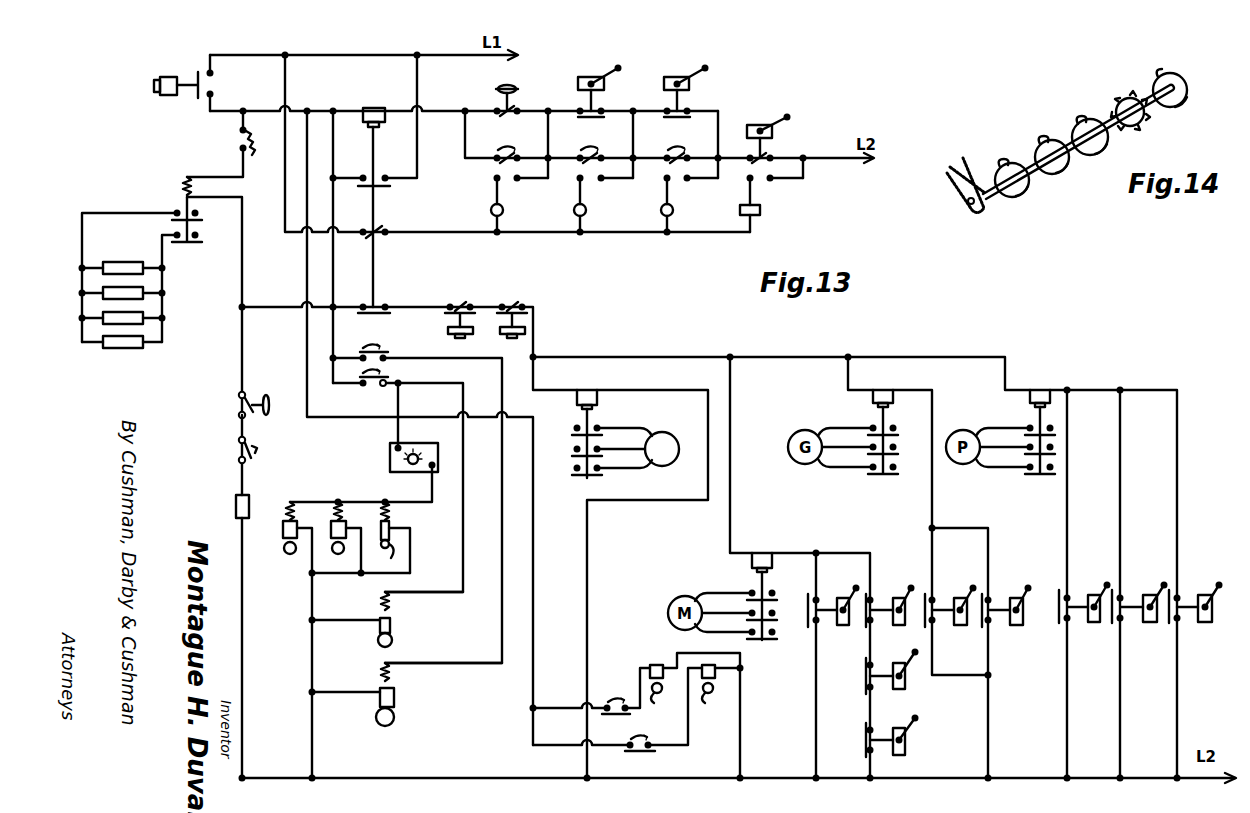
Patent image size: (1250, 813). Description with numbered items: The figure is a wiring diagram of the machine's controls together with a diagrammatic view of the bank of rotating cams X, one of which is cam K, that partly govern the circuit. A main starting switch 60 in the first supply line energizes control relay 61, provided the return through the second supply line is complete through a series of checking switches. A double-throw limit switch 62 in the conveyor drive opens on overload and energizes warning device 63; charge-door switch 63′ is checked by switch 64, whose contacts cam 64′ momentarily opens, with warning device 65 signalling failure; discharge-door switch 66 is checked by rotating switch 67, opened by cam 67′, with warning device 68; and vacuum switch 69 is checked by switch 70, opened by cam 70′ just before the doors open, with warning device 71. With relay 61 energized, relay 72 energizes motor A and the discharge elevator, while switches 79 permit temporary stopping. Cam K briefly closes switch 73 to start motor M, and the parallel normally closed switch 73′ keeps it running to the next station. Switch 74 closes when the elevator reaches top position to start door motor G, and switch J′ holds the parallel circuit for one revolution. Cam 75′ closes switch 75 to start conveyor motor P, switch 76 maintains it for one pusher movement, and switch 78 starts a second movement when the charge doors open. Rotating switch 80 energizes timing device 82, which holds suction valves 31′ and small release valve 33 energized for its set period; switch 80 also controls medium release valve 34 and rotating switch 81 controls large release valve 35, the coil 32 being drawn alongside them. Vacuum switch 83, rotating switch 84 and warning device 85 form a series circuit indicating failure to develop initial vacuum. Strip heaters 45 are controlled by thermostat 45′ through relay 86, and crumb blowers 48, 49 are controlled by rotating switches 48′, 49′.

In FIG. 13, the main starting switch 60 is at (176, 72).
In FIG. 13, the control relay 61 is at (375, 108).
In FIG. 13, the thermostat 45′ is at (240, 144).
In FIG. 13, the relay 86 is at (197, 228).
In FIG. 13, the strip heaters 45 is at (138, 272).
In FIG. 13, the vacuum switch 69 is at (513, 87).
In FIG. 13, the discharge door actuated switch 66 is at (604, 78).
In FIG. 13, the switch 63′ is at (693, 80).
In FIG. 13, the double-throw limit switch 62 is at (773, 133).
In FIG. 13, the switch 70 is at (495, 161).
In FIG. 13, the rotating switch 67 is at (580, 161).
In FIG. 13, the switch 64 is at (666, 161).
In FIG. 13, the warning device 71 is at (503, 210).
In FIG. 13, the warning device 68 is at (586, 210).
In FIG. 13, the warning device 65 is at (673, 210).
In FIG. 13, the warning device 63 is at (760, 210).
In FIG. 13, the switches 79 is at (473, 333).
In FIG. 13, the rotating switch 81 is at (388, 354).
In FIG. 13, the rotating switch 80 is at (388, 379).
In FIG. 13, the timing device 82 is at (416, 443).
In FIG. 13, the vacuum switch 83 is at (273, 395).
In FIG. 13, the rotating switch 84 is at (254, 455).
In FIG. 13, the warning device 85 is at (250, 500).
In FIG. 13, the suction valves 31′ is at (335, 548).
In FIG. 13, the solenoid valve 32 is at (361, 538).
In FIG. 13, the small release valve 33 is at (390, 554).
In FIG. 13, the medium release valve 34 is at (392, 637).
In FIG. 13, the large release valve 35 is at (394, 714).
In FIG. 13, the relay 72 is at (597, 396).
In FIG. 13, the rotating switch 48′ is at (626, 717).
In FIG. 13, the crumb blower 48 is at (684, 717).
In FIG. 13, the crumb blower 49 is at (696, 705).
In FIG. 13, the rotating switch 49′ is at (648, 755).
In FIG. 13, the switch 73 is at (845, 626).
In FIG. 13, the switch 73′ is at (893, 626).
In FIG. 13, the switch 74 is at (958, 626).
In FIG. 13, the switch J′ is at (1014, 626).
In FIG. 13, the switch 76 is at (1096, 623).
In FIG. 13, the switch 75 is at (1152, 623).
In FIG. 13, the switch 78 is at (1207, 623).
In FIG. 14, the cam 67′ is at (1020, 197).
In FIG. 14, the cam 64′ is at (1043, 138).
In FIG. 14, the cam 70′ is at (1095, 155).
In FIG. 14, the cam 75′ is at (1182, 107).
In FIG. 14, the cam K is at (1132, 96).
In FIG. 14, the cam means X is at (1076, 125).